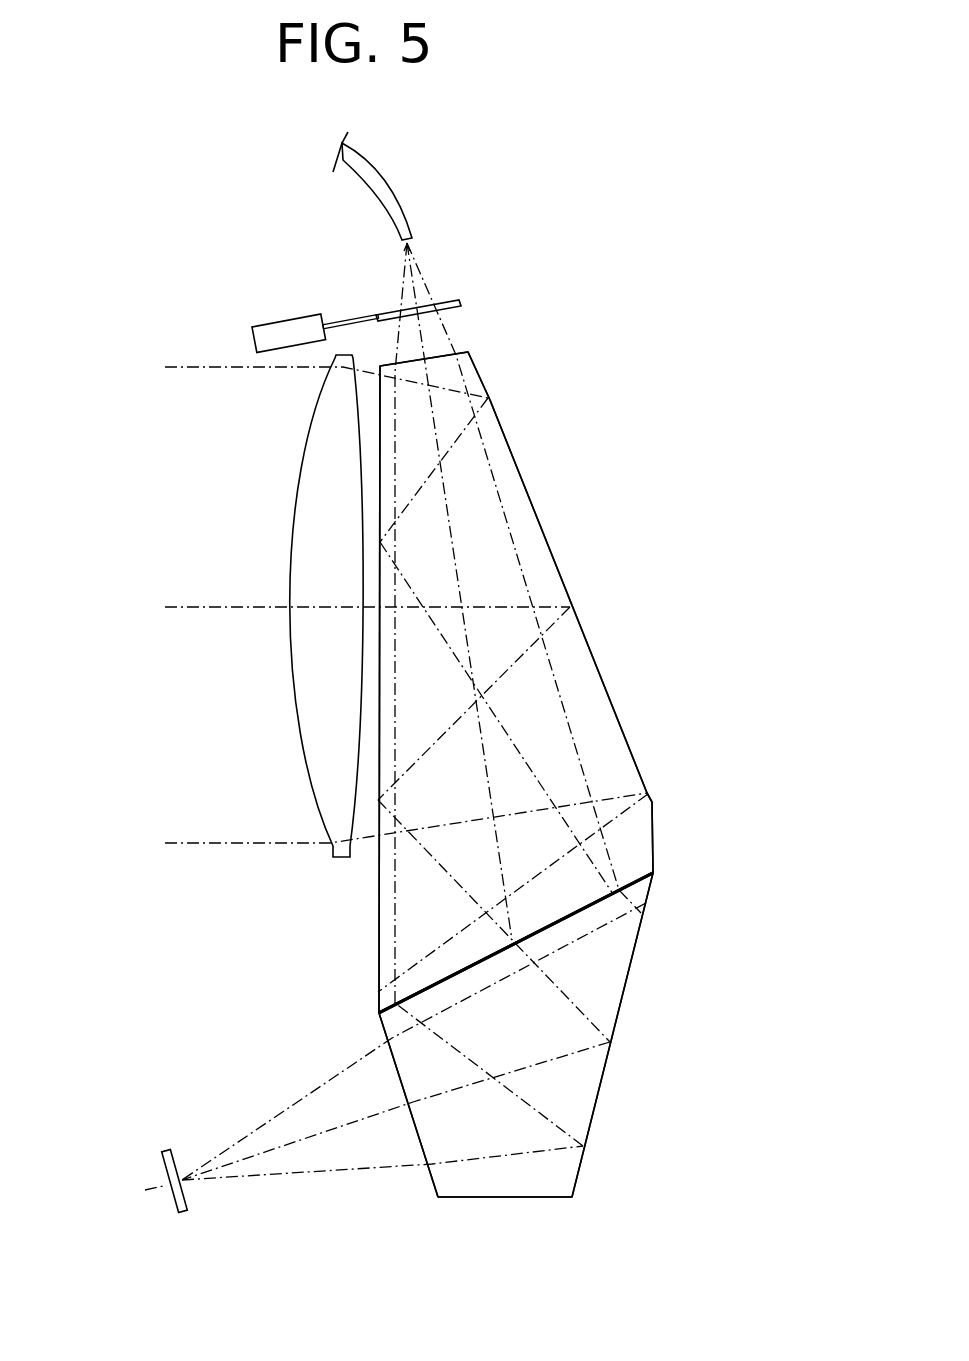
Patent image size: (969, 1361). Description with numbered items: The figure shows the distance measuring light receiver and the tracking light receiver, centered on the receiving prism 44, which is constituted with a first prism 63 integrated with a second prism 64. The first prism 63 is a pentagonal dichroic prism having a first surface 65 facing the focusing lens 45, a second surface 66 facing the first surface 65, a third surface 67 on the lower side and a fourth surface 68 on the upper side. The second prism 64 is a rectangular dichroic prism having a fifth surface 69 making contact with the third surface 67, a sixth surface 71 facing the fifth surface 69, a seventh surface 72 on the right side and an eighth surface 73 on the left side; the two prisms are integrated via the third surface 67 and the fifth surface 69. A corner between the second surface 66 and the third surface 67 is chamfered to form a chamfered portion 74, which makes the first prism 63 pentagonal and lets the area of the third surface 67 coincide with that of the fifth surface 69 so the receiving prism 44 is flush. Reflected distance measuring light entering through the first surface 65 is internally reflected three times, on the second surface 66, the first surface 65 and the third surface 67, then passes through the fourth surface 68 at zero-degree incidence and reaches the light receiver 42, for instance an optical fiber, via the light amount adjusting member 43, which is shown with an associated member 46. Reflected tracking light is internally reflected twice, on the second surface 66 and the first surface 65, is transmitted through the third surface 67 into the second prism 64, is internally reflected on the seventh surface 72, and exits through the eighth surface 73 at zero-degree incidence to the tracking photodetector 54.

The light receiver 42 is at (395, 186).
The light amount adjusting member 43 is at (454, 300).
The receiving prism 44 is at (610, 603).
The focusing lens 45 is at (292, 690).
The drive unit 46 is at (272, 323).
The tracking photodetector 54 is at (162, 1165).
The first prism 63 is at (507, 438).
The second prism 64 is at (603, 1095).
The first surface 65 is at (379, 481).
The second surface 66 is at (533, 504).
The third surface 67 is at (462, 973).
The fourth surface 68 is at (441, 357).
The fifth surface 69 is at (578, 912).
The sixth surface 71 is at (503, 1199).
The seventh surface 72 is at (620, 1016).
The eighth surface 73 is at (401, 1088).
The chamfered portion 74 is at (655, 831).